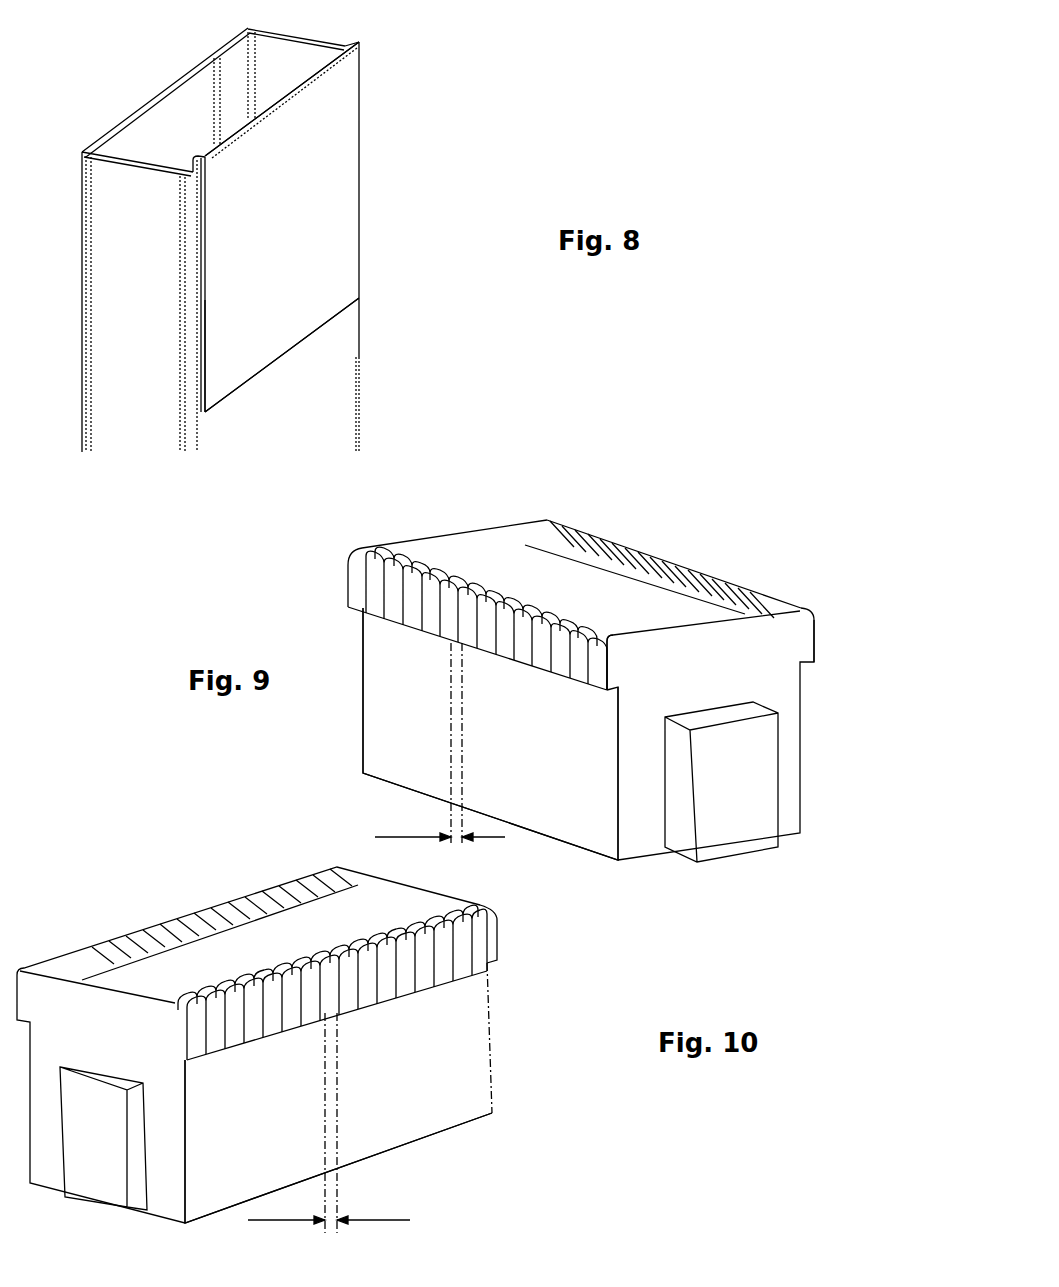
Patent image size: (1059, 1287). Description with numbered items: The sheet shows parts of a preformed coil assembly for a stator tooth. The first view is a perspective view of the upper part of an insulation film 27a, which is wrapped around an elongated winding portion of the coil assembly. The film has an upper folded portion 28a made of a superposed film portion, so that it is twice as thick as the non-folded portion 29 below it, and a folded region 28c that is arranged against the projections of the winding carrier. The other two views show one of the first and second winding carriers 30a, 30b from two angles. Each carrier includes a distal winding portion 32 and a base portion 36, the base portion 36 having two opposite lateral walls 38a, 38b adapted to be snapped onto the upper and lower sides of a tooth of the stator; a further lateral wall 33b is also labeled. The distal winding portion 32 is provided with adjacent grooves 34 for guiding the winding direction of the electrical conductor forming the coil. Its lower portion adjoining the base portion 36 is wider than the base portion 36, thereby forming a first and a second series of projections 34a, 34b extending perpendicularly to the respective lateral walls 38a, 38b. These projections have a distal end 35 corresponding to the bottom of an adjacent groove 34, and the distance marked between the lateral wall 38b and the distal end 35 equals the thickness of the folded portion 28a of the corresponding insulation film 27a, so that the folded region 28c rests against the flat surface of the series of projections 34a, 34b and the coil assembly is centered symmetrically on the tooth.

In FIG. 8, the first insulation film 27a is at (395, 110).
In FIG. 8, the upper folded portion 28a is at (284, 232).
In FIG. 8, the folded region 28c is at (294, 83).
In FIG. 8, the non-folded portion 29 is at (299, 379).
In FIG. 9, the first winding carrier 30a is at (732, 508).
In FIG. 10, the second winding carrier 30b is at (135, 857).
In FIG. 9, the distal winding portion 32 is at (333, 605).
In FIG. 10, the distal winding portion 32 is at (227, 890).
In FIG. 9, the opposite lateral wall 33b is at (605, 660).
In FIG. 9, the adjacent grooves 34 is at (707, 585).
In FIG. 9, the first series of projections 34a is at (440, 650).
In FIG. 10, the second series of projections 34b is at (340, 1033).
In FIG. 9, the distal end 35 is at (458, 643).
In FIG. 10, the distal end 35 is at (328, 1013).
In FIG. 9, the base portion 36 is at (347, 747).
In FIG. 10, the base portion 36 is at (422, 1168).
In FIG. 9, the opposite lateral wall 38a is at (547, 793).
In FIG. 10, the opposite lateral wall 38b is at (415, 1045).